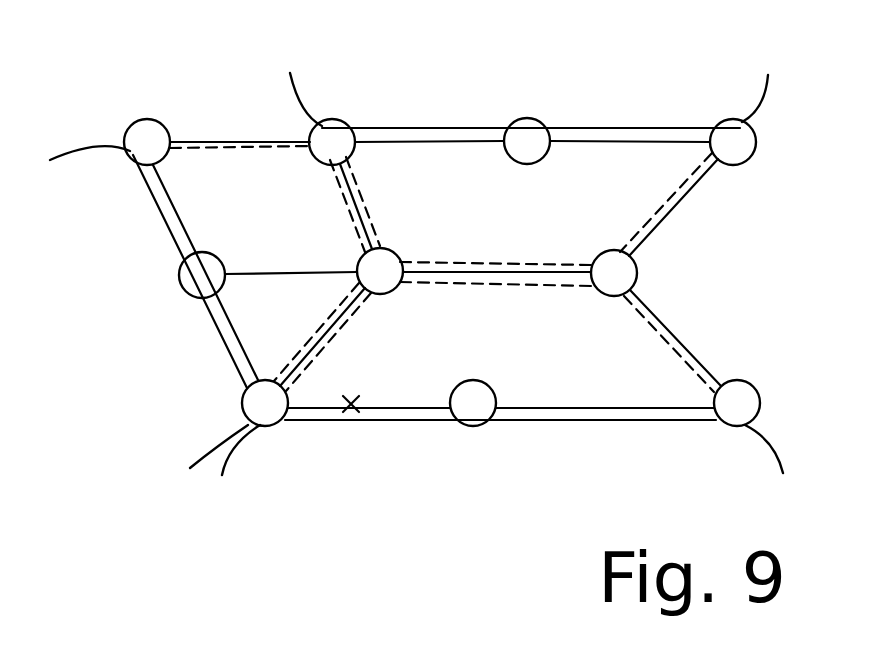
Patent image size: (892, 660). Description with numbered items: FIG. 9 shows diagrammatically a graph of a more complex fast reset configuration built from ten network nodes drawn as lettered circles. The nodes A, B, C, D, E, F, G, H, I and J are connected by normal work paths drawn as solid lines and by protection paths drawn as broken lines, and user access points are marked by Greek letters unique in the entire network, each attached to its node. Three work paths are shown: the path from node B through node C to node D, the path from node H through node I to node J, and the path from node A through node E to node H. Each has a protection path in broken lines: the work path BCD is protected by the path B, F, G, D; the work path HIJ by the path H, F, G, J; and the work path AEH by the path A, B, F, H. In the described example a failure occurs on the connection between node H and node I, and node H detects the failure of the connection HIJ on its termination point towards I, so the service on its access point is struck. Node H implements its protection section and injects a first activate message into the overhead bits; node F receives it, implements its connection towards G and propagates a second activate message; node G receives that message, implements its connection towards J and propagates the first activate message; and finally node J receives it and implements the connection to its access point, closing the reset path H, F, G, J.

The node A is at (147, 142).
The node B is at (332, 142).
The node C is at (527, 141).
The node D is at (733, 142).
The node E is at (202, 275).
The node F is at (380, 271).
The node G is at (614, 273).
The node H is at (265, 403).
The node I is at (473, 403).
The node J is at (737, 403).